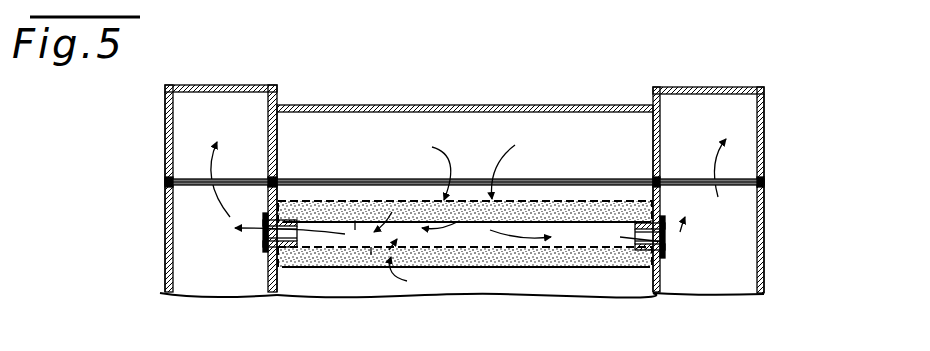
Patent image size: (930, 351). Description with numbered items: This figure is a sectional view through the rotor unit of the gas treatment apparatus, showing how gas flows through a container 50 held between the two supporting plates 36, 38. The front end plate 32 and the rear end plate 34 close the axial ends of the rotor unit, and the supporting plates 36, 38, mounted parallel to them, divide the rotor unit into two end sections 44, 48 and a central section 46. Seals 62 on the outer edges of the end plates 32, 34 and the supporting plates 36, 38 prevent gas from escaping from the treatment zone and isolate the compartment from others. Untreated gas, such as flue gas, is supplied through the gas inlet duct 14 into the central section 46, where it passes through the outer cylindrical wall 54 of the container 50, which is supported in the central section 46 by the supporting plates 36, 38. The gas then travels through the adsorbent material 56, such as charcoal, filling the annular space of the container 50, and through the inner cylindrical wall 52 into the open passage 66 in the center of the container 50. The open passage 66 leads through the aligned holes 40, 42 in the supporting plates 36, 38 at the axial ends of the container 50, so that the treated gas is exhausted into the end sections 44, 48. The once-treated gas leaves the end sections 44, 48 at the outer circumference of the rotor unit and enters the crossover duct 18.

The gas inlet duct 14 is at (477, 130).
The crossover duct 18 is at (222, 100).
The front end plate 32 is at (767, 259).
The rear end plate 34 is at (165, 256).
The supporting plate 36 is at (661, 291).
The supporting plate 38 is at (277, 280).
The holes 40 is at (666, 241).
The holes 42 is at (263, 237).
The end section 44 is at (722, 281).
The central section 46 is at (515, 281).
The end section 48 is at (225, 286).
The container 50 is at (576, 274).
The inner cylindrical wall 52 is at (355, 224).
The outer cylindrical wall 54 is at (557, 265).
The adsorbent material 56 is at (411, 208).
The seals 62 is at (165, 173).
The open passage 66 is at (450, 236).